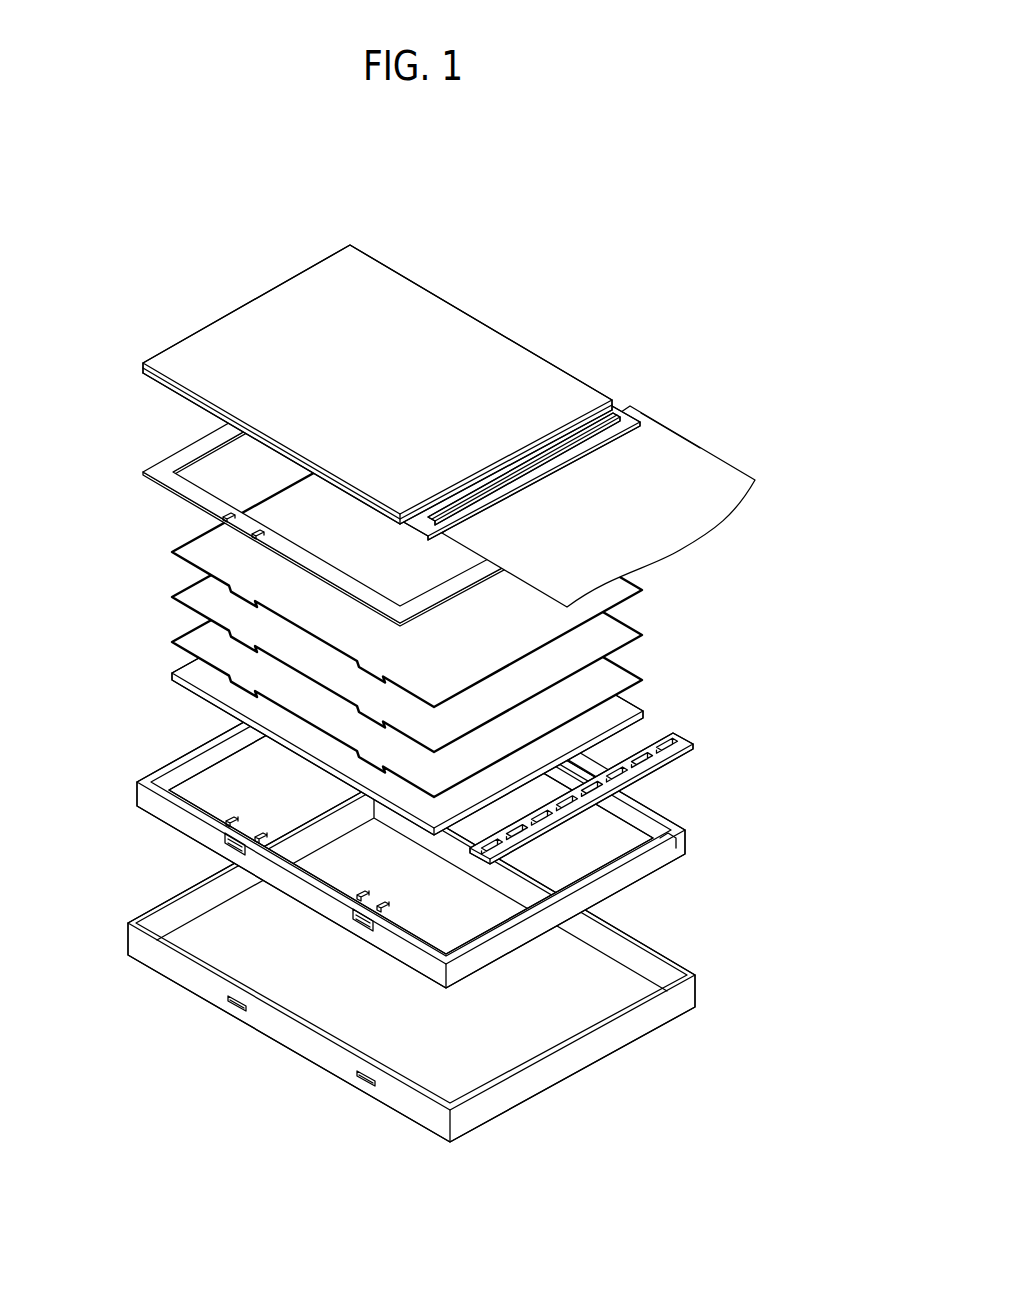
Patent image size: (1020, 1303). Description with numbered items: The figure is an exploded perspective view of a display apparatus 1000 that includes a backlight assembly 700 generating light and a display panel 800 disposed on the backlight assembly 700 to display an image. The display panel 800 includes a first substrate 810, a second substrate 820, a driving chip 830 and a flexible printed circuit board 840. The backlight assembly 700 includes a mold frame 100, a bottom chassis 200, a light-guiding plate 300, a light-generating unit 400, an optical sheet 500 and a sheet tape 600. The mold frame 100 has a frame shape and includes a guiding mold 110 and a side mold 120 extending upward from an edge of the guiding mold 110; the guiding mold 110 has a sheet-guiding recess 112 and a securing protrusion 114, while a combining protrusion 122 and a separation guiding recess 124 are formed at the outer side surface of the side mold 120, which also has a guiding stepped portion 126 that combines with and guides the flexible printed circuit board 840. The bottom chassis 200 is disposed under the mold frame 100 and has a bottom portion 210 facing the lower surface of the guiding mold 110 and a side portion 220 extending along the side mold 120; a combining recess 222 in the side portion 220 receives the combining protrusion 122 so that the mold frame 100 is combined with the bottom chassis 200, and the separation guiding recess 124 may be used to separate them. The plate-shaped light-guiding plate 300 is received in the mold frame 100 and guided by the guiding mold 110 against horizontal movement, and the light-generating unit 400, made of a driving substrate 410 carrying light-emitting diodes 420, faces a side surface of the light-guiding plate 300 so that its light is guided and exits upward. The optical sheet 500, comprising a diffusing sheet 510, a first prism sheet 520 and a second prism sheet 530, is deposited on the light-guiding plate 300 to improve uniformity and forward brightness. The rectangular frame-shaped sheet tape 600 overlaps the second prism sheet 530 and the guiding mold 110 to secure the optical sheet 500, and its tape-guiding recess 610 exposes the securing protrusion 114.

The display apparatus 1000 is at (500, 282).
The display panel 800 is at (738, 330).
The first substrate 810 is at (662, 433).
The second substrate 820 is at (557, 383).
The driving chip 830 is at (622, 410).
The flexible printed circuit board 840 is at (661, 450).
The backlight assembly 700 is at (52, 960).
The sheet tape 600 is at (163, 451).
The tape-guiding recess 610 is at (254, 535).
The optical sheet 500 is at (162, 552).
The second prism sheet 530 is at (630, 588).
The first prism sheet 520 is at (630, 632).
The diffusing sheet 510 is at (630, 677).
The light-guiding plate 300 is at (188, 683).
The light-generating unit 400 is at (751, 746).
The driving substrate 410 is at (668, 757).
The light-emitting diode 420 is at (678, 737).
The mold frame 100 is at (96, 818).
The guiding mold 110 is at (178, 784).
The side mold 120 is at (195, 827).
The sheet-guiding recess 112 is at (246, 838).
The securing protrusion 114 is at (232, 822).
The combining protrusion 122 is at (382, 918).
The separation guiding recess 124 is at (355, 908).
The guiding stepped portion 126 is at (640, 866).
The bottom chassis 200 is at (312, 1120).
The bottom portion 210 is at (445, 1092).
The side portion 220 is at (392, 1096).
The combining recess 222 is at (230, 1008).